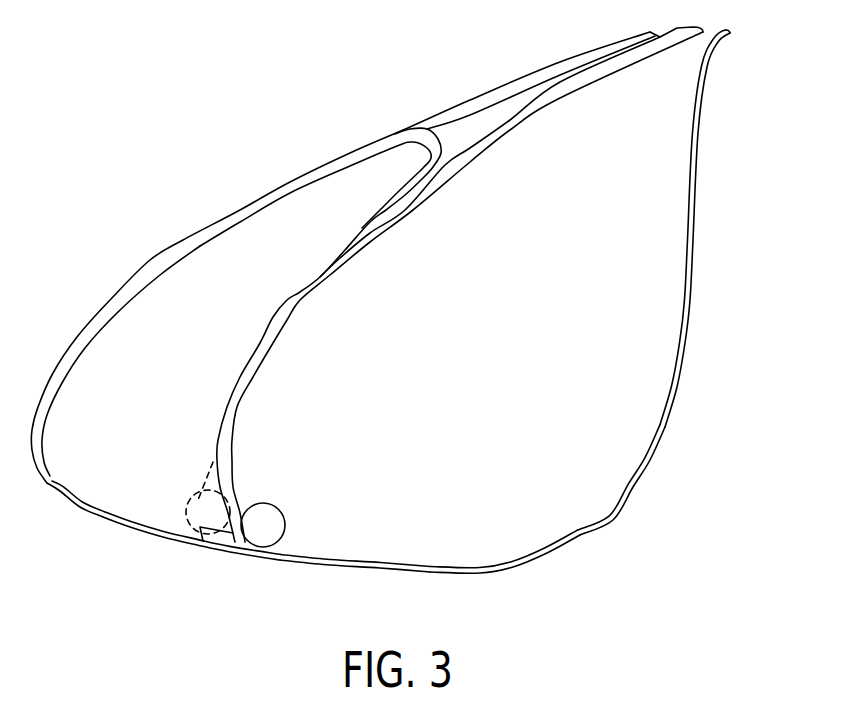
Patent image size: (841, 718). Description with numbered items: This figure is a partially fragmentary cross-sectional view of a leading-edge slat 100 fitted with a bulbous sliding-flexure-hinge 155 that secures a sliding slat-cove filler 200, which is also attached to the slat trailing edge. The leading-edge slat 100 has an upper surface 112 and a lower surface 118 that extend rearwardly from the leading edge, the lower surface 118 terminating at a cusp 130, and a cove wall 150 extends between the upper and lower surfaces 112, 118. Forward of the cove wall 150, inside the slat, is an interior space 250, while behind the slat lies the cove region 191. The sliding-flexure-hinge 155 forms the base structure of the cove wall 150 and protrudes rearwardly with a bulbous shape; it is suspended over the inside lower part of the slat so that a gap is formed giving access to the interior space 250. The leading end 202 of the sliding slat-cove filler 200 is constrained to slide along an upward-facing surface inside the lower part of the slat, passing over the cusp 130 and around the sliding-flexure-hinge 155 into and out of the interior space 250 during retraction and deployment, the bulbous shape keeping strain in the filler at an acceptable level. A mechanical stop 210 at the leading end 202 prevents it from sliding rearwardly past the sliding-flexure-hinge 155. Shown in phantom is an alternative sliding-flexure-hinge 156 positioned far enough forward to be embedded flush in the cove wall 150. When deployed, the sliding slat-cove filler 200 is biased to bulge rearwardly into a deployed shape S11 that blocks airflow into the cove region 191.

The leading-edge slat 100 is at (143, 252).
The upper surface 112 is at (243, 208).
The lower surface 118 is at (128, 528).
The cusp 130 is at (343, 573).
The cove wall 150 is at (321, 279).
The sliding-flexure-hinge 155 is at (265, 503).
The sliding-flexure-hinge 156 is at (194, 500).
The cove region 191 is at (612, 311).
The sliding slat-cove filler 200 is at (668, 474).
The leading end 202 is at (312, 557).
The mechanical stop 210 is at (201, 541).
The interior space 250 is at (178, 362).
The deployed shape S11 is at (618, 506).